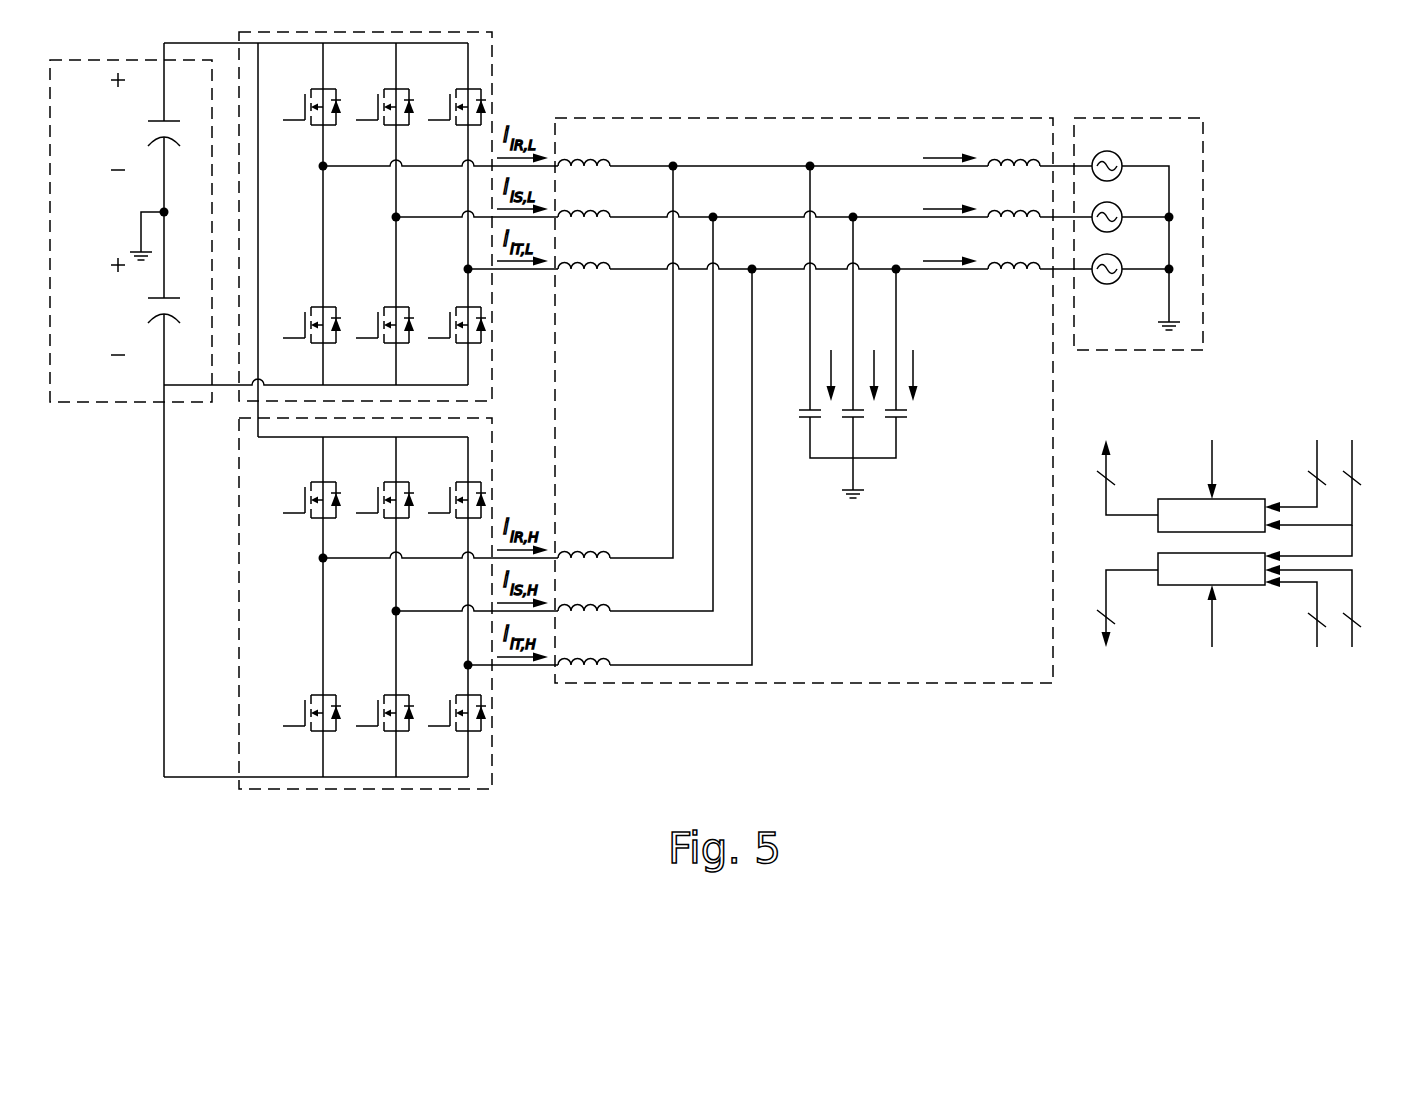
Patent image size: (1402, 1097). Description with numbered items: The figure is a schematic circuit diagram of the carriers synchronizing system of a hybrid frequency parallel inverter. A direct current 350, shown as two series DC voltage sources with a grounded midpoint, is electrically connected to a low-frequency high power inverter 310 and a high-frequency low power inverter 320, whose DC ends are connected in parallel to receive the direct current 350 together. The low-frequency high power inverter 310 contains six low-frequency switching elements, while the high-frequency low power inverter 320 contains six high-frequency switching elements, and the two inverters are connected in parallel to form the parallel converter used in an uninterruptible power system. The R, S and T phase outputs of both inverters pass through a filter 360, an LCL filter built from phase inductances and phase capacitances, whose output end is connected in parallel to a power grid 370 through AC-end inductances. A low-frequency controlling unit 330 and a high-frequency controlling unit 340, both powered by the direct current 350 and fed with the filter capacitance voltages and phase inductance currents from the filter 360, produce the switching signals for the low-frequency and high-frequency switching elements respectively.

The low-frequency high power inverter 310 is at (508, 46).
The high-frequency low power inverter 320 is at (258, 790).
The low-frequency controlling unit 330 is at (1243, 465).
The high-frequency controlling unit 340 is at (1243, 602).
The direct current 350 is at (130, 405).
The filter 360 is at (805, 85).
The power grid 370 is at (1180, 85).